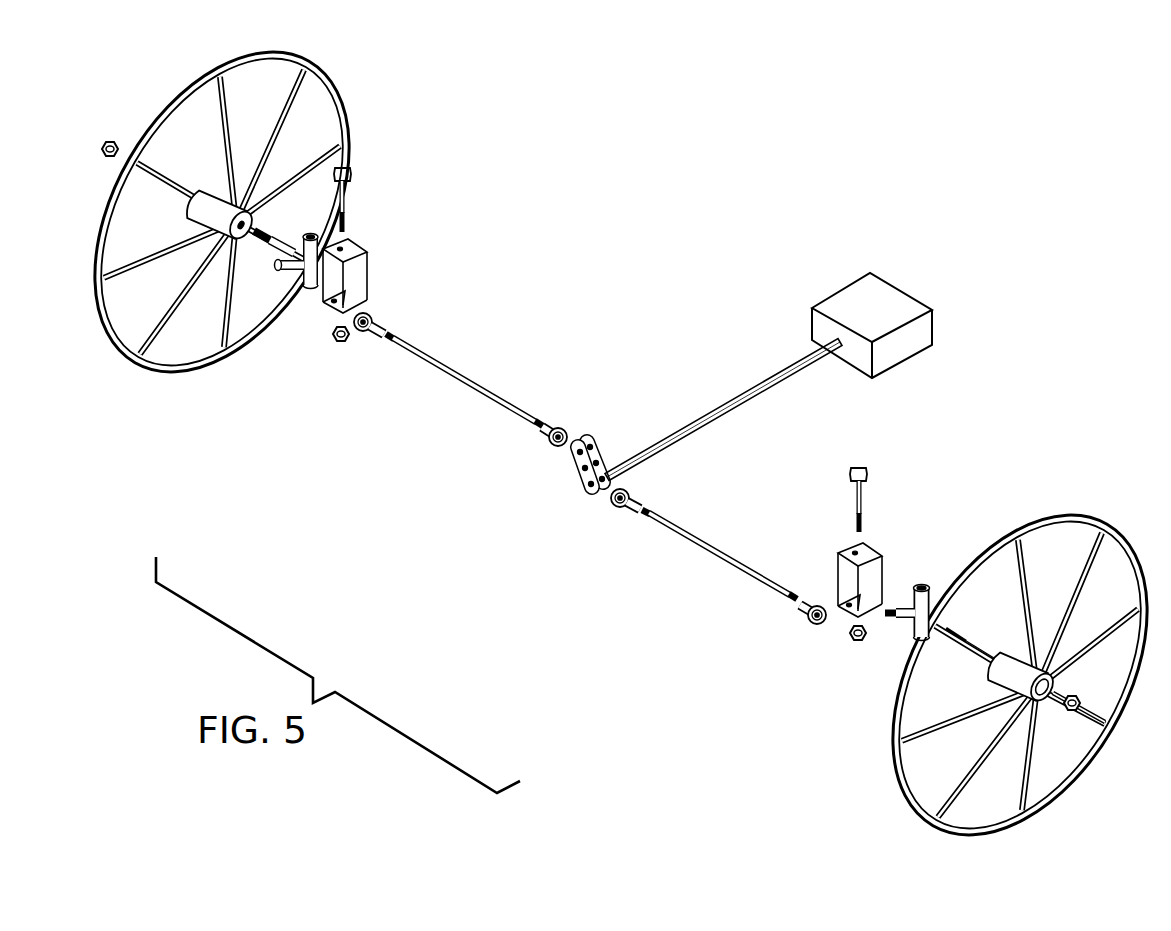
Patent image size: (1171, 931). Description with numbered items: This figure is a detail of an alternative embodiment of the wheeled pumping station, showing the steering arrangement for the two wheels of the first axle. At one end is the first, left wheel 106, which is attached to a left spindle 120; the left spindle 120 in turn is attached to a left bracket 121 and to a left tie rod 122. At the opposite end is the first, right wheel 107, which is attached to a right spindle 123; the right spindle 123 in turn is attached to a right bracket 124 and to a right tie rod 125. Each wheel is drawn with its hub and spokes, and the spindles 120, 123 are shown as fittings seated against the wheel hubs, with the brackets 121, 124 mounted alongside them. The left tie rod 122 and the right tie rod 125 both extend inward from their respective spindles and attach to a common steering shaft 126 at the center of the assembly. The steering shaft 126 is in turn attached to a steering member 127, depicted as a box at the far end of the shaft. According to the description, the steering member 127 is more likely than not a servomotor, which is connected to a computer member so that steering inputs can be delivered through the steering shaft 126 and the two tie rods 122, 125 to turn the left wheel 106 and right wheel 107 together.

The first, left wheel 106 is at (1003, 813).
The first, right wheel 107 is at (183, 366).
The left spindle 120 is at (927, 617).
The left bracket 121 is at (838, 555).
The left tie rod 122 is at (743, 568).
The right spindle 123 is at (308, 283).
The right bracket 124 is at (357, 272).
The right tie rod 125 is at (436, 366).
The steering shaft 126 is at (722, 403).
The steering member 127 is at (840, 308).